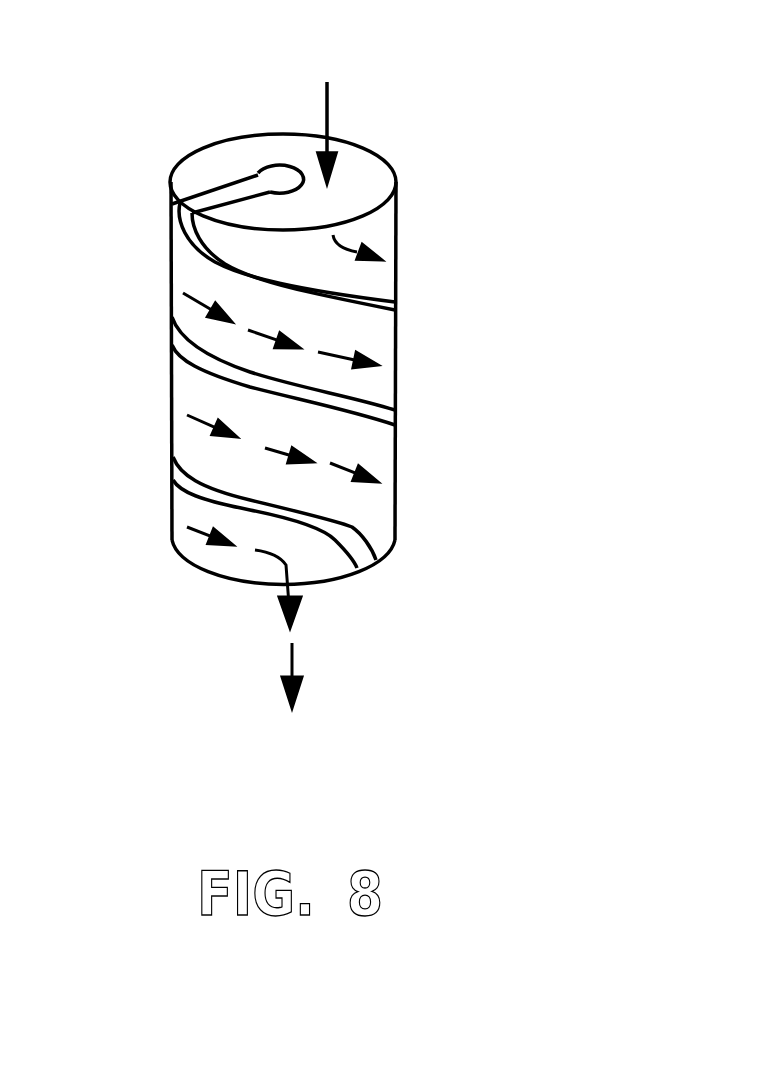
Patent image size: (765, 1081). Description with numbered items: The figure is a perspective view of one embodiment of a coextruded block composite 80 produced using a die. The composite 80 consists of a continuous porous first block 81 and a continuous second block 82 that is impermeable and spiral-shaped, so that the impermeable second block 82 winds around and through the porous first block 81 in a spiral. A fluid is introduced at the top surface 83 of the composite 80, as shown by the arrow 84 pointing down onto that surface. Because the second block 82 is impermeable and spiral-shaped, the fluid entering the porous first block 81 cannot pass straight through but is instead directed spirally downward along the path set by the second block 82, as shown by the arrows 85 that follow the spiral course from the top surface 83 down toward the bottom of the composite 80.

The coextruded block composite 80 is at (410, 358).
The continuous porous first block 81 is at (218, 170).
The continuous second block 82 is at (278, 160).
The top surface 83 is at (270, 212).
The arrow 84 is at (333, 99).
The arrows 85 is at (326, 353).